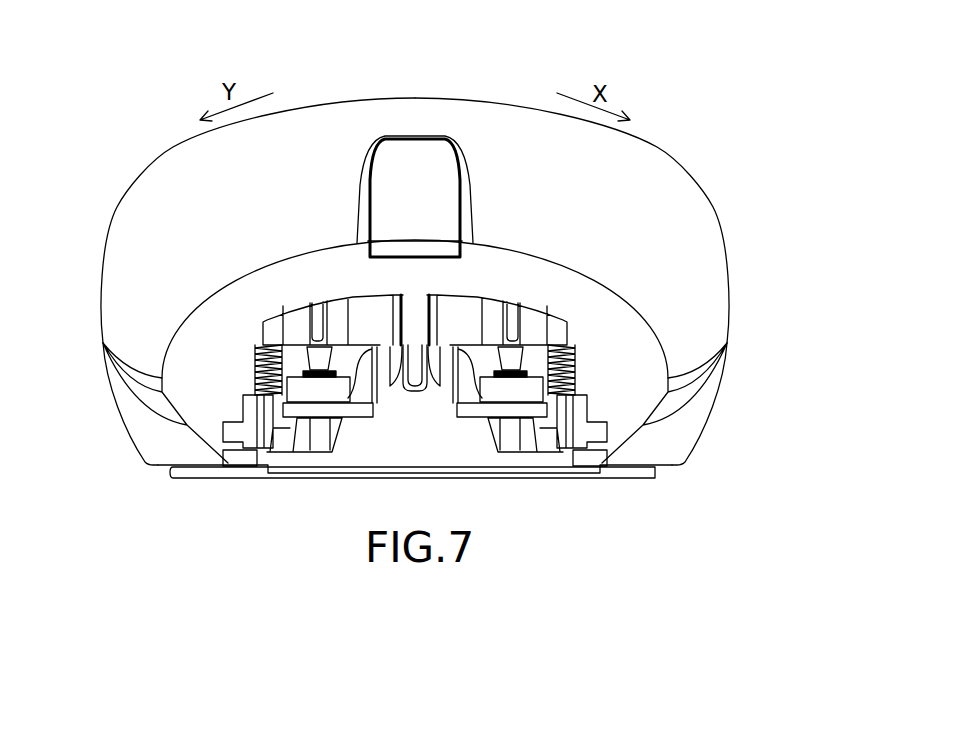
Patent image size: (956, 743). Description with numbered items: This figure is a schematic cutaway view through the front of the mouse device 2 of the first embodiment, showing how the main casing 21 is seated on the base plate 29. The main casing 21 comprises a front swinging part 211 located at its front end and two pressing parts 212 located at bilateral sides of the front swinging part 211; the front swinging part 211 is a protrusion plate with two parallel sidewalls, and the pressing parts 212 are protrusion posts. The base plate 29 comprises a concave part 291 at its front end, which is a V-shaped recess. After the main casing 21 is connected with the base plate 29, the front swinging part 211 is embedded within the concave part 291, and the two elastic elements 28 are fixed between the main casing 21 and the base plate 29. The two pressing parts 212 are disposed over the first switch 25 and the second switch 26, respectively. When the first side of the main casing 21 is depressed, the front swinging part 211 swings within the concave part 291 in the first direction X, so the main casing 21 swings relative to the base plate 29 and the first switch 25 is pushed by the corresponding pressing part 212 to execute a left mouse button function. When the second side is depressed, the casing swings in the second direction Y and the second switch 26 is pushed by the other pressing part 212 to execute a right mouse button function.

The mouse device 2 is at (709, 148).
The main casing 21 is at (447, 100).
The front swinging part 211 is at (413, 377).
The pressing parts 212 is at (320, 360).
The first switch 25 is at (517, 393).
The second switch 26 is at (317, 393).
The elastic elements 28 is at (257, 352).
The base plate 29 is at (635, 471).
The concave part 291 is at (433, 376).